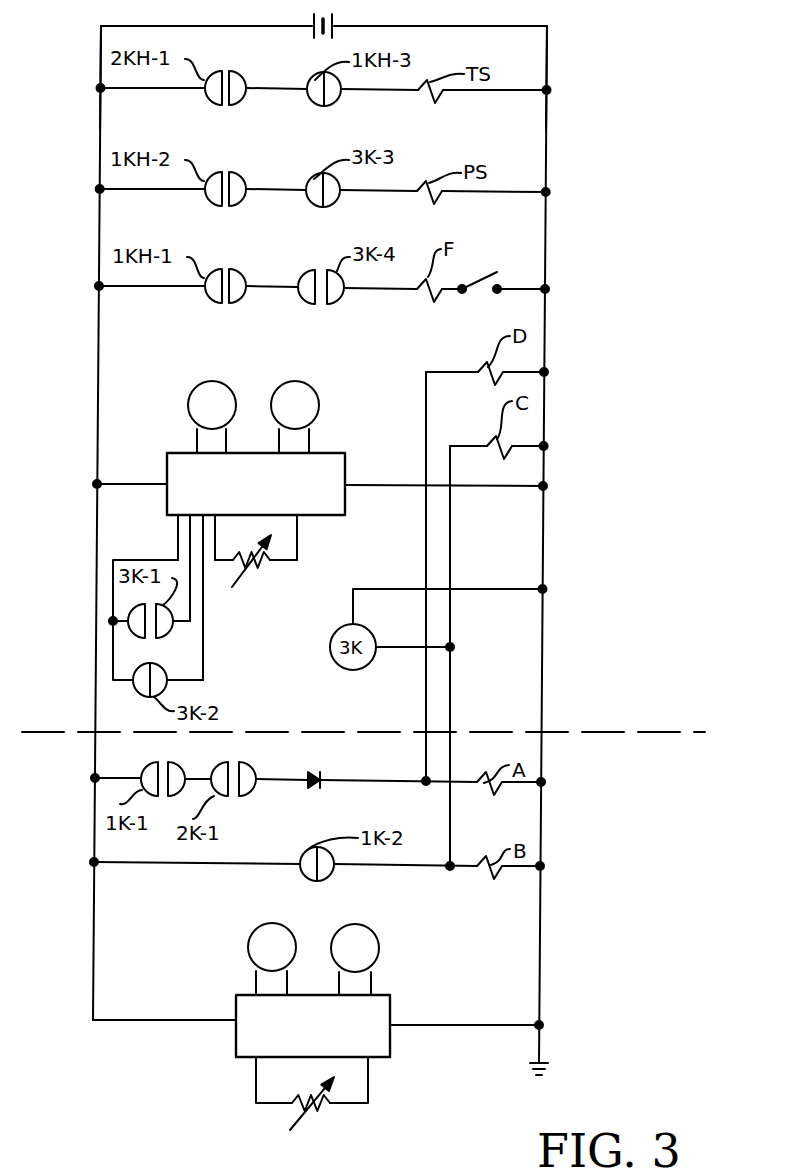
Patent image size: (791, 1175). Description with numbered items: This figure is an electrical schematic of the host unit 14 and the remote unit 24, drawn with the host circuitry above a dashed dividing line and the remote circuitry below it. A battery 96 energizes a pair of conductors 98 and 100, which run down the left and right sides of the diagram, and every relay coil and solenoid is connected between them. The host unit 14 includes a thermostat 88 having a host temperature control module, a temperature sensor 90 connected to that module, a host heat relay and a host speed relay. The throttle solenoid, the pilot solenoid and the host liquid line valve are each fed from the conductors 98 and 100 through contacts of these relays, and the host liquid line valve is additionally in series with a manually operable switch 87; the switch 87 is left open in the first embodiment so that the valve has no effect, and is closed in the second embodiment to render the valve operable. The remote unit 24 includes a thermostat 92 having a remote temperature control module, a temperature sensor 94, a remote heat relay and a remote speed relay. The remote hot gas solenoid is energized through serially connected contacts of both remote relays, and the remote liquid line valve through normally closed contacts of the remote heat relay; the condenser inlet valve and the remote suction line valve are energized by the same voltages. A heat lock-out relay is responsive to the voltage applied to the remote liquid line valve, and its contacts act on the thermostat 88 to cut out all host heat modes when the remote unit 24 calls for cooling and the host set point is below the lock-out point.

The battery 96 is at (335, 25).
The conductor 98 is at (101, 58).
The conductor 100 is at (548, 76).
The manually operable switch 87 is at (486, 277).
The thermostat 88 is at (167, 469).
The temperature sensor 90 is at (250, 582).
The thermostat 92 is at (236, 1016).
The temperature sensor 94 is at (310, 1122).
The host unit 14 is at (363, 717).
The remote unit 24 is at (363, 759).